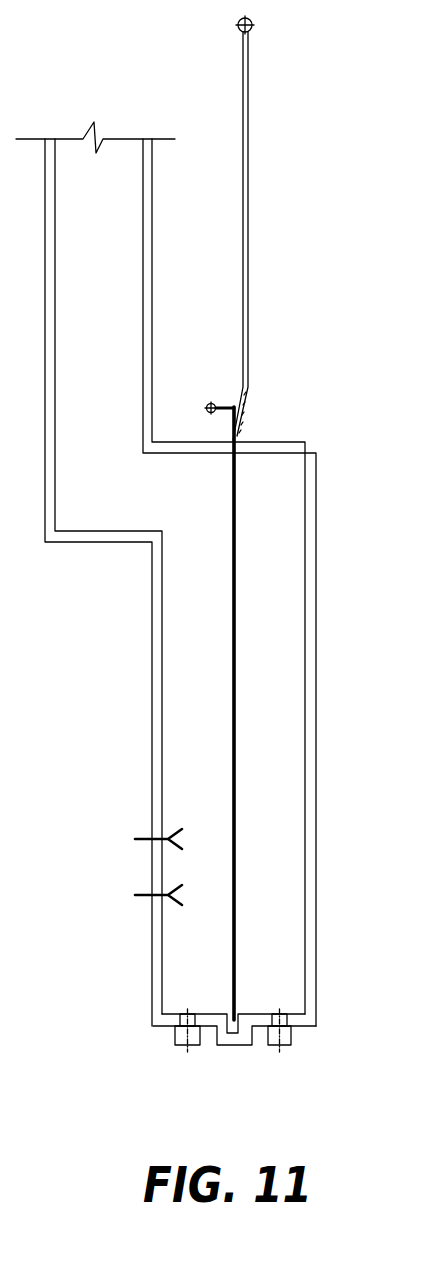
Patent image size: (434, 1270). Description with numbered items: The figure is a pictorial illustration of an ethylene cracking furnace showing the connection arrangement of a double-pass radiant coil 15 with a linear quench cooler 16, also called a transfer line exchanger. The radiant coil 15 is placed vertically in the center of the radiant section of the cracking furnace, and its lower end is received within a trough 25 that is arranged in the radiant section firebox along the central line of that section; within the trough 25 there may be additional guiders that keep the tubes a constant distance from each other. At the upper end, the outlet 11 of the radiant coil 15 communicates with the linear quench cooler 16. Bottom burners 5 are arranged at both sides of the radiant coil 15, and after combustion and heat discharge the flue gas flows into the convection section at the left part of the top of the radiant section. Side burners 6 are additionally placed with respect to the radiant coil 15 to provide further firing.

The linear quench cooler 16 is at (250, 104).
The outlet 11 is at (248, 387).
The double-pass radiant coil 15 is at (236, 712).
The side burners 6 is at (146, 838).
The bottom burners 5 is at (177, 1036).
The trough 25 is at (240, 1043).